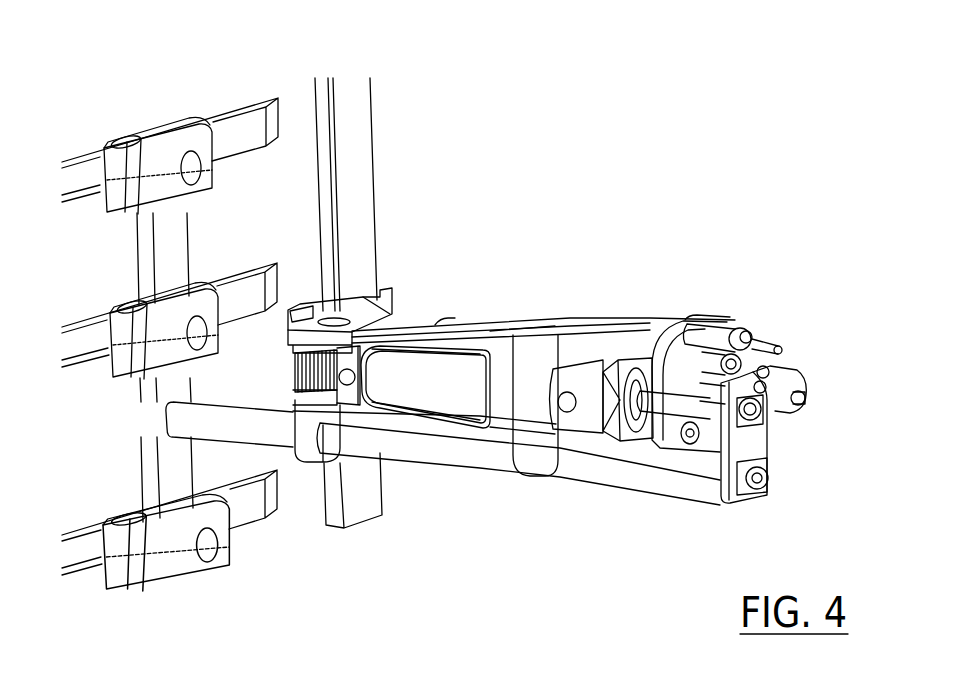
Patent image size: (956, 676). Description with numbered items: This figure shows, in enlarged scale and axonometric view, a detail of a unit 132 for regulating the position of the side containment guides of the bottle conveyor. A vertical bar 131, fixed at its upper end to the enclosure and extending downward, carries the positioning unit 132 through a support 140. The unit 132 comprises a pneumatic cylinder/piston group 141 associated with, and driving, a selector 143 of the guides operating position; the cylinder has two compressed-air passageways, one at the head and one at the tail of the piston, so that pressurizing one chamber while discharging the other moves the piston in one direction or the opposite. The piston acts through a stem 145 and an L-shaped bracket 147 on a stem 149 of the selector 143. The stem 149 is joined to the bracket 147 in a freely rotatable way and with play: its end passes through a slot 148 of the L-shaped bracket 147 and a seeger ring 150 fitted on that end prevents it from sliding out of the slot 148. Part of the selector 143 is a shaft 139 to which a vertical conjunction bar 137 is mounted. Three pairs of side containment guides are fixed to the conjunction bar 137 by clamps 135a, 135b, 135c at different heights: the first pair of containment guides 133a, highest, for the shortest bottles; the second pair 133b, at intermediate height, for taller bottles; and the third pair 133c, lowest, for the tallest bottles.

The bar 131 is at (358, 187).
The positioning unit 132 is at (667, 229).
The first pair of containment guides 133a is at (222, 109).
The second pair of containment guides 133b is at (227, 274).
The third pair of containment guides 133c is at (68, 534).
The clamp 135a is at (110, 139).
The clamp 135b is at (123, 365).
The clamp 135c is at (123, 573).
The vertical conjunction bar 137 is at (145, 259).
The shaft 139 is at (650, 472).
The support 140 is at (370, 323).
The pneumatic cylinder/piston group 141 is at (447, 393).
The selector 143 is at (713, 322).
The stem 145 is at (657, 405).
The L-shaped bracket 147 is at (740, 448).
The slot 148 is at (797, 416).
The stem 149 is at (783, 392).
The seeger ring 150 is at (801, 392).